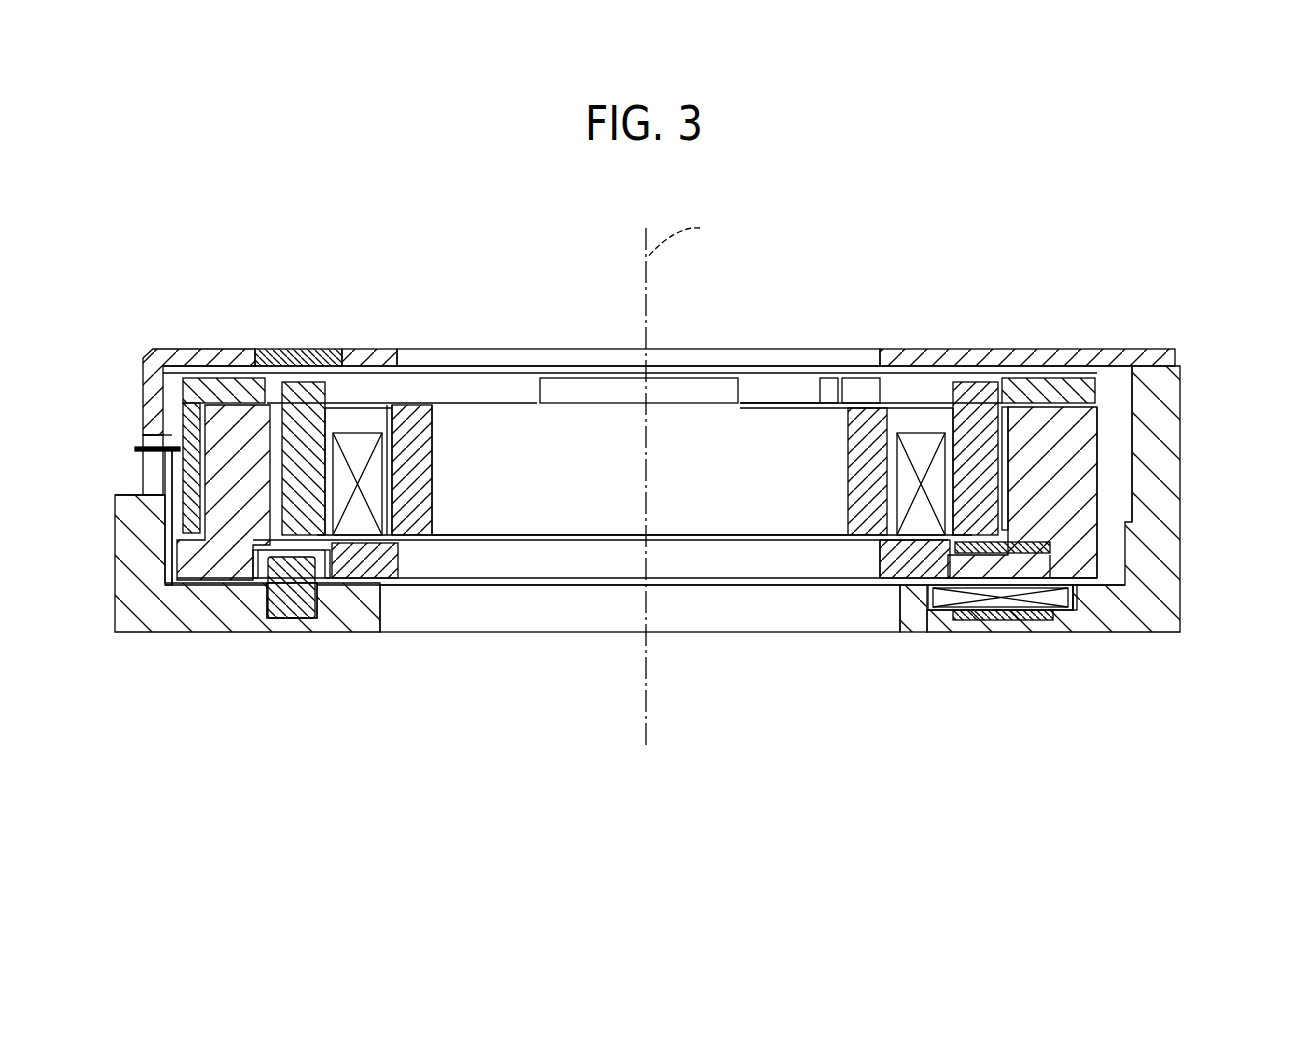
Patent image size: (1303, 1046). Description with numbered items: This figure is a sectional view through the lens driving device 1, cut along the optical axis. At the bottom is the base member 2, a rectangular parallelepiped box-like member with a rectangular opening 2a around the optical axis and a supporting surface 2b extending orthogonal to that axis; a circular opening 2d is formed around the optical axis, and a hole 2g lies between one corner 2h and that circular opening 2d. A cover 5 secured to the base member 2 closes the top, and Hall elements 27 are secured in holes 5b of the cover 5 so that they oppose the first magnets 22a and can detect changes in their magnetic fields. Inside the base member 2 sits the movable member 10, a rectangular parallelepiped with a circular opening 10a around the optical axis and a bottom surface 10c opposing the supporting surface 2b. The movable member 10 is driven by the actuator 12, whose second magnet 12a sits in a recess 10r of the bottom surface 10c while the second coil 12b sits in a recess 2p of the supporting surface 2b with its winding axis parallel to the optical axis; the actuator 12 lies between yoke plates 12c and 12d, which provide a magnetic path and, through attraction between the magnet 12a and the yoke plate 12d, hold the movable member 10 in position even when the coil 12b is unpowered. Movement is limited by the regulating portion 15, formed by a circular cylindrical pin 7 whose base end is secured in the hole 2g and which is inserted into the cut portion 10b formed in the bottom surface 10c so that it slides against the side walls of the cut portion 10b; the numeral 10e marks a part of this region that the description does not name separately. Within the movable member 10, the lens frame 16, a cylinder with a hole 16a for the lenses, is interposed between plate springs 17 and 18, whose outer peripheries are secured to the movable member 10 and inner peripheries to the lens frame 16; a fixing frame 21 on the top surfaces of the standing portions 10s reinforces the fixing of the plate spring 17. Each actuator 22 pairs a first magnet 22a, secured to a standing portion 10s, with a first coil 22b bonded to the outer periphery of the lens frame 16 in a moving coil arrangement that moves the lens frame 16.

The drive device 1 is at (1040, 202).
The base member 2 is at (657, 507).
The rectangular opening 2a is at (1130, 400).
The supporting surface 2b is at (380, 573).
The circular opening 2d is at (900, 605).
The hole 2g is at (305, 610).
The corner 2h is at (133, 500).
The recess 2p is at (1067, 613).
The cover 5 is at (652, 340).
The holes 5b is at (327, 352).
The pin 7 is at (283, 603).
The movable member 10 is at (657, 552).
The circular opening 10a is at (880, 562).
The cut portion 10b is at (268, 572).
The bottom surface 10c is at (885, 548).
The engaging groove wall 10e is at (322, 562).
The recess 10r is at (1047, 570).
The standing portions 10s is at (1098, 435).
The actuator 12 is at (1063, 640).
The second magnet 12a is at (935, 585).
The second coil 12b is at (942, 602).
The yoke plate 12c is at (1052, 545).
The yoke plate 12d is at (1003, 651).
The regulating portion 15 is at (262, 665).
The lens frame 16 is at (639, 408).
The hole 16a is at (432, 468).
The plate spring 17 is at (777, 400).
The plate spring 18 is at (540, 537).
The fixing frame 21 is at (243, 388).
The actuator 22 is at (650, 390).
The first magnet 22a is at (298, 380).
The first coil 22b is at (920, 440).
The Hall elements 27 is at (303, 390).